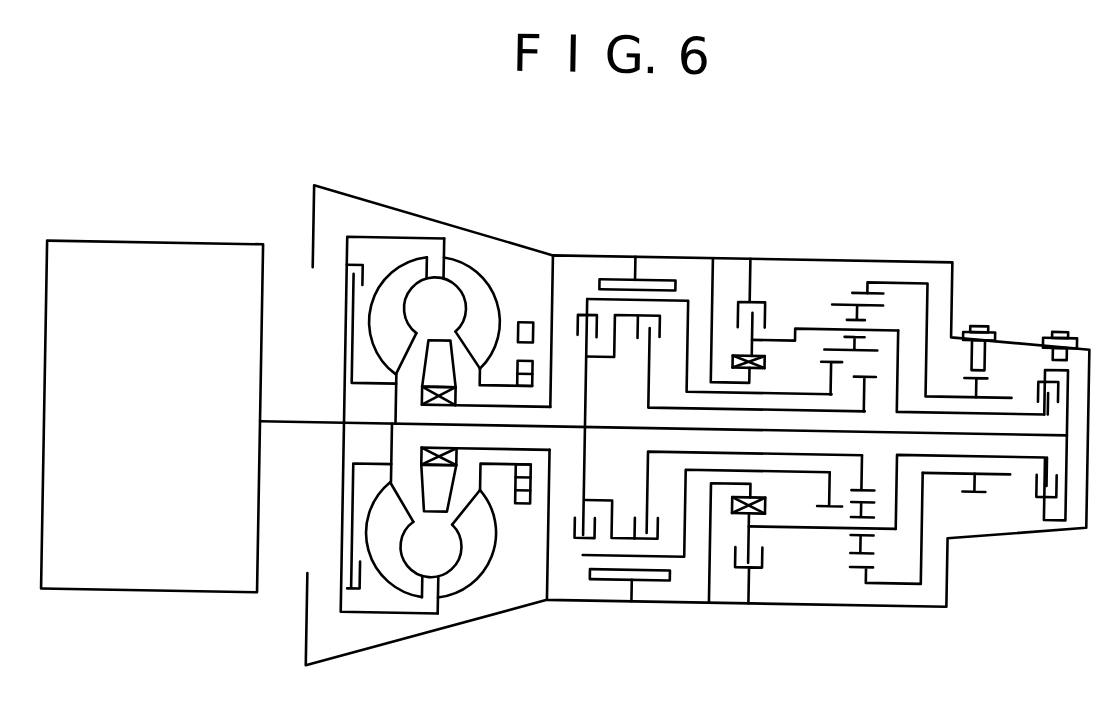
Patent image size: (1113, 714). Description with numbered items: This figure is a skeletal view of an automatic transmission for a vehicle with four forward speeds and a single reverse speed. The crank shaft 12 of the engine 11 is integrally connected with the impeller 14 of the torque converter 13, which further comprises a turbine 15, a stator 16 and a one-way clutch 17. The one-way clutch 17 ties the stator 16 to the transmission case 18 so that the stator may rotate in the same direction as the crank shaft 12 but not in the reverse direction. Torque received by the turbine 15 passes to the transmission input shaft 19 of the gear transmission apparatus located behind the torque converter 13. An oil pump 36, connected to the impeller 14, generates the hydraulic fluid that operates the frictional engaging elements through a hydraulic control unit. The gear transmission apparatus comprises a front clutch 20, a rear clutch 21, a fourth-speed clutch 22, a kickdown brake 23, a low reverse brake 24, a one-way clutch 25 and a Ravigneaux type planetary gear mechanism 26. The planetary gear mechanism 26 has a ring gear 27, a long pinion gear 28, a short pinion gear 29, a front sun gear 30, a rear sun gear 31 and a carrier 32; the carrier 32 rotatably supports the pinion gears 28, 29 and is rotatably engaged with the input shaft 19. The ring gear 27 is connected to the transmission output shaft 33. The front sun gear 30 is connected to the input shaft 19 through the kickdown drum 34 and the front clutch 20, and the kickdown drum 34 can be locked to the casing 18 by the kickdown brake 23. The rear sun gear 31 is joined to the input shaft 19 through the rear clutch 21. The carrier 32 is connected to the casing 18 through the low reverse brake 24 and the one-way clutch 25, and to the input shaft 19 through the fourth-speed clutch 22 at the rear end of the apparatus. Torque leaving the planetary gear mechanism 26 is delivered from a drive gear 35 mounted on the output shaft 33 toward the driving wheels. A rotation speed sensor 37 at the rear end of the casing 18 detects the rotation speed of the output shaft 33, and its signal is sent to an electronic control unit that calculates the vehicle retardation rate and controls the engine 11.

The engine 11 is at (156, 256).
The crank shaft 12 is at (300, 422).
The torque converter 13 is at (395, 235).
The impeller 14 is at (472, 287).
The turbine 15 is at (390, 550).
The stator 16 is at (436, 500).
The one-way clutch 17 is at (420, 453).
The transmission case 18 is at (788, 596).
The transmission input shaft 19 is at (502, 421).
The front clutch 20 is at (586, 537).
The rear clutch 21 is at (651, 537).
The fourth-speed clutch 22 is at (1044, 485).
The kickdown brake 23 is at (619, 274).
The low reverse brake 24 is at (746, 560).
The one-way clutch 25 is at (734, 347).
The ravigneaux type planetary gear mechanism 26 is at (810, 299).
The ring gear 27 is at (876, 574).
The long pinion gear 28 is at (830, 296).
The short pinion gear 29 is at (854, 556).
The front sun gear 30 is at (841, 498).
The rear sun gear 31 is at (866, 368).
The carrier 32 is at (894, 317).
The transmission output shaft 33 is at (964, 464).
The kickdown drum 34 is at (686, 551).
The drive gear 35 is at (980, 482).
The oil pump 36 is at (534, 500).
The rotation speed sensor 37 is at (996, 323).